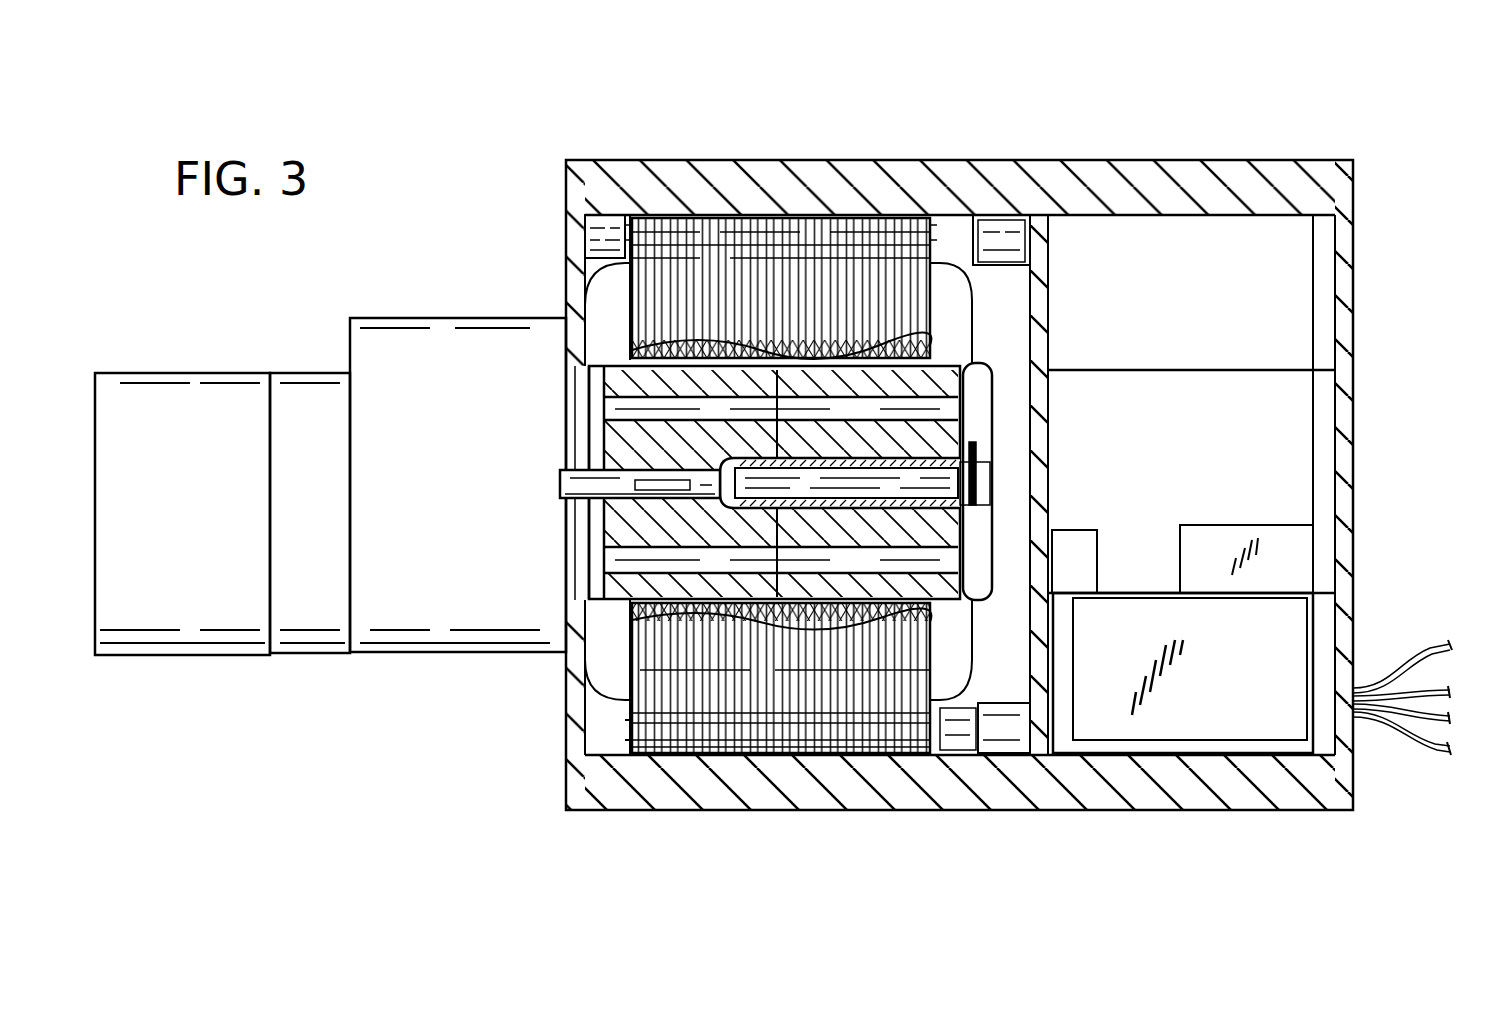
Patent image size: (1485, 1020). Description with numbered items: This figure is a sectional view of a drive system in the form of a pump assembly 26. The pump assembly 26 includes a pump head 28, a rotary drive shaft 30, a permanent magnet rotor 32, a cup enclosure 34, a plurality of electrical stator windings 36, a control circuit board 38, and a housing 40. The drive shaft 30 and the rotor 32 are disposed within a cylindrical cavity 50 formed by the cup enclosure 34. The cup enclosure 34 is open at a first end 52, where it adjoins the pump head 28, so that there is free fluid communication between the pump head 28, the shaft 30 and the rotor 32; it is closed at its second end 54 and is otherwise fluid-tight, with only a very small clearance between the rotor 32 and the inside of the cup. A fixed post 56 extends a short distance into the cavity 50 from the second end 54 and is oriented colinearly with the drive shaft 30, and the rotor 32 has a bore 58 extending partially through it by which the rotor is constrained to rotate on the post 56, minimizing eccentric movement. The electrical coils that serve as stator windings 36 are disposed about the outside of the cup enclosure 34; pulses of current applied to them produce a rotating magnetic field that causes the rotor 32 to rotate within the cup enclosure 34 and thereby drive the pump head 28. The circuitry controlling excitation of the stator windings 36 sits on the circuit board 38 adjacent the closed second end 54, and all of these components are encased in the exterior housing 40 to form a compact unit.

The pump assembly 26 is at (1253, 160).
The pump head 28 is at (416, 318).
The rotary drive shaft 30 is at (590, 455).
The permanent magnet rotor 32 is at (627, 600).
The cup enclosure 34 is at (988, 366).
The electrical stator windings 36 is at (733, 220).
The control circuit board 38 is at (1038, 213).
The housing 40 is at (705, 795).
The cylindrical cavity 50 is at (597, 410).
The first end 52 is at (594, 358).
The second end 54 is at (1000, 444).
The fixed post 56 is at (967, 472).
The bore 58 is at (735, 507).